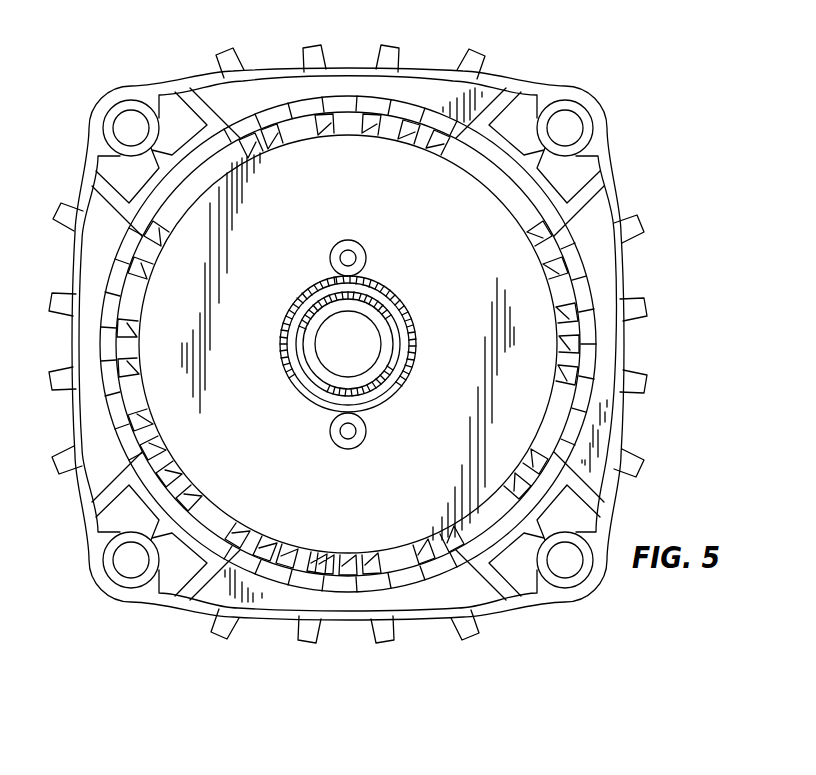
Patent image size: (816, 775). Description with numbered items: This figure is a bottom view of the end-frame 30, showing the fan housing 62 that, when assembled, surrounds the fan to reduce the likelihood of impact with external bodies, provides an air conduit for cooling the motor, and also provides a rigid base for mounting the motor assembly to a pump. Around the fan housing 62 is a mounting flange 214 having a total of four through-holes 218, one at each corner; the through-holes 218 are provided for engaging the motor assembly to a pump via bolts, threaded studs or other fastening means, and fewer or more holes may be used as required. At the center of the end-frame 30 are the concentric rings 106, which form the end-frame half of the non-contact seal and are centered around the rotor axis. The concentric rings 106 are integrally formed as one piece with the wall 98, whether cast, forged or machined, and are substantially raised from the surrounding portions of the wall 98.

The end-frame 30 is at (106, 78).
The mounting flange 214 is at (498, 74).
The through-holes 218 is at (586, 118).
The fan housing 62 is at (590, 225).
The wall 98 is at (400, 203).
The concentric rings 106 is at (384, 306).